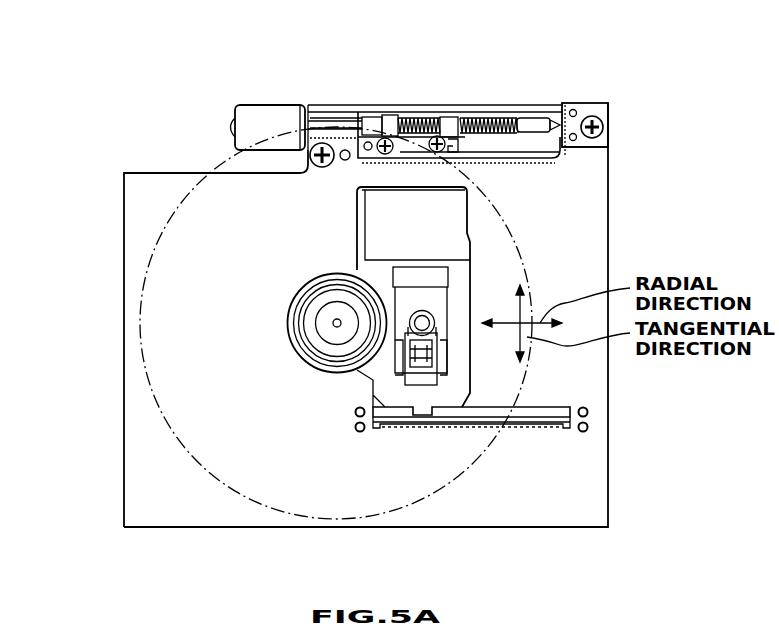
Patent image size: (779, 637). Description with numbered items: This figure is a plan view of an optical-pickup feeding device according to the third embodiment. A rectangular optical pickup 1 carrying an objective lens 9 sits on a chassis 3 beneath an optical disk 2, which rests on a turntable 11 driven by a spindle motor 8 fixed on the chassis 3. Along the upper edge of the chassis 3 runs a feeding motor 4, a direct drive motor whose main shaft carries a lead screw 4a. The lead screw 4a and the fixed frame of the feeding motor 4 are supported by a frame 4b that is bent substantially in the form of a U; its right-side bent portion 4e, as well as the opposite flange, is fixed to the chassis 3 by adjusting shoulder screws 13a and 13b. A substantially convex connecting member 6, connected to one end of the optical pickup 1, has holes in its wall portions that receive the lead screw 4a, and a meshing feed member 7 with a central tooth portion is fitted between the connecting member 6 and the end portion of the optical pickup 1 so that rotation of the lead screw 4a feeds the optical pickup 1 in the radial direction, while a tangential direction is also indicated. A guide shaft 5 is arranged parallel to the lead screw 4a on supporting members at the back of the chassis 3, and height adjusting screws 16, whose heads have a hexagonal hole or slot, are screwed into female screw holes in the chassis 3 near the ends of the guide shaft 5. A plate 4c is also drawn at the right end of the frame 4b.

The optical pickup 1 is at (457, 217).
The optical disk 2 is at (213, 166).
The chassis 3 is at (585, 253).
The feeding motor 4 is at (265, 113).
The lead screw 4a is at (505, 118).
The frame 4b is at (450, 107).
The mounting bracket 4c is at (574, 133).
The bent portion 4e is at (602, 143).
The guide shaft 5 is at (542, 410).
The connecting member 6 is at (372, 118).
The meshing feed member 7 is at (388, 116).
The spindle motor 8 is at (313, 317).
The objective lens 9 is at (430, 332).
The turntable 11 is at (290, 333).
The adjusting shoulder screw 13a is at (602, 118).
The adjusting shoulder screw 13b is at (327, 143).
The height adjusting screws 16 is at (588, 414).